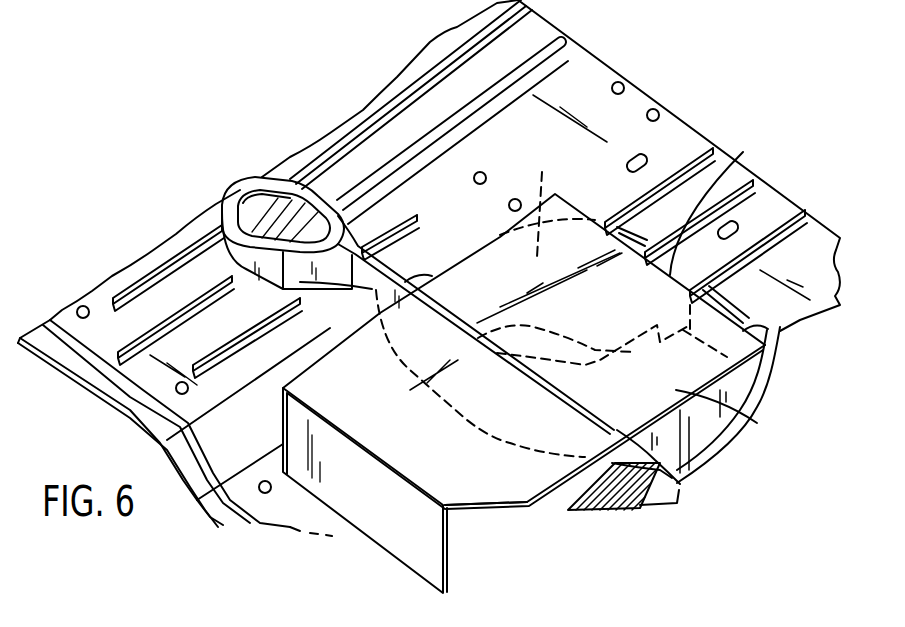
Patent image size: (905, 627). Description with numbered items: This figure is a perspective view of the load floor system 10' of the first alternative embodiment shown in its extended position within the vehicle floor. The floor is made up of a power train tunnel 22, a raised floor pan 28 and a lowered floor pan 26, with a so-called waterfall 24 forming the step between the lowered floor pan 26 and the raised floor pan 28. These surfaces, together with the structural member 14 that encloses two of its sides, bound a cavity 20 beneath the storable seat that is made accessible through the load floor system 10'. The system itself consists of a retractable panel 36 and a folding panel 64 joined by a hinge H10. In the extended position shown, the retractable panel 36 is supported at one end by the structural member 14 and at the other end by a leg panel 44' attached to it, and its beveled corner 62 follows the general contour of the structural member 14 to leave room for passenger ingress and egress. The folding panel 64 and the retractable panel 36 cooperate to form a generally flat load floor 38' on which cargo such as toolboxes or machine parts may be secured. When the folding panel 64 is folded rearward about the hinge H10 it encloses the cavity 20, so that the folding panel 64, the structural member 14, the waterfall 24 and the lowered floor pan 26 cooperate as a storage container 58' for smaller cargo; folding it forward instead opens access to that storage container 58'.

The power train tunnel 22 is at (594, 77).
The raised floor pan 28 is at (672, 148).
The waterfall 24 is at (743, 152).
The storage container 58' is at (551, 299).
The load floor 38' is at (418, 305).
The load floor system 10' is at (288, 309).
The leg panel 44' is at (365, 490).
The beveled corner 62 is at (498, 505).
The retractable panel 36 is at (548, 478).
The lowered floor pan 26 is at (642, 505).
The hinge H10 is at (683, 490).
The structural member 14 is at (693, 457).
The folding panel 64 is at (757, 423).
The cavity 20 is at (770, 380).